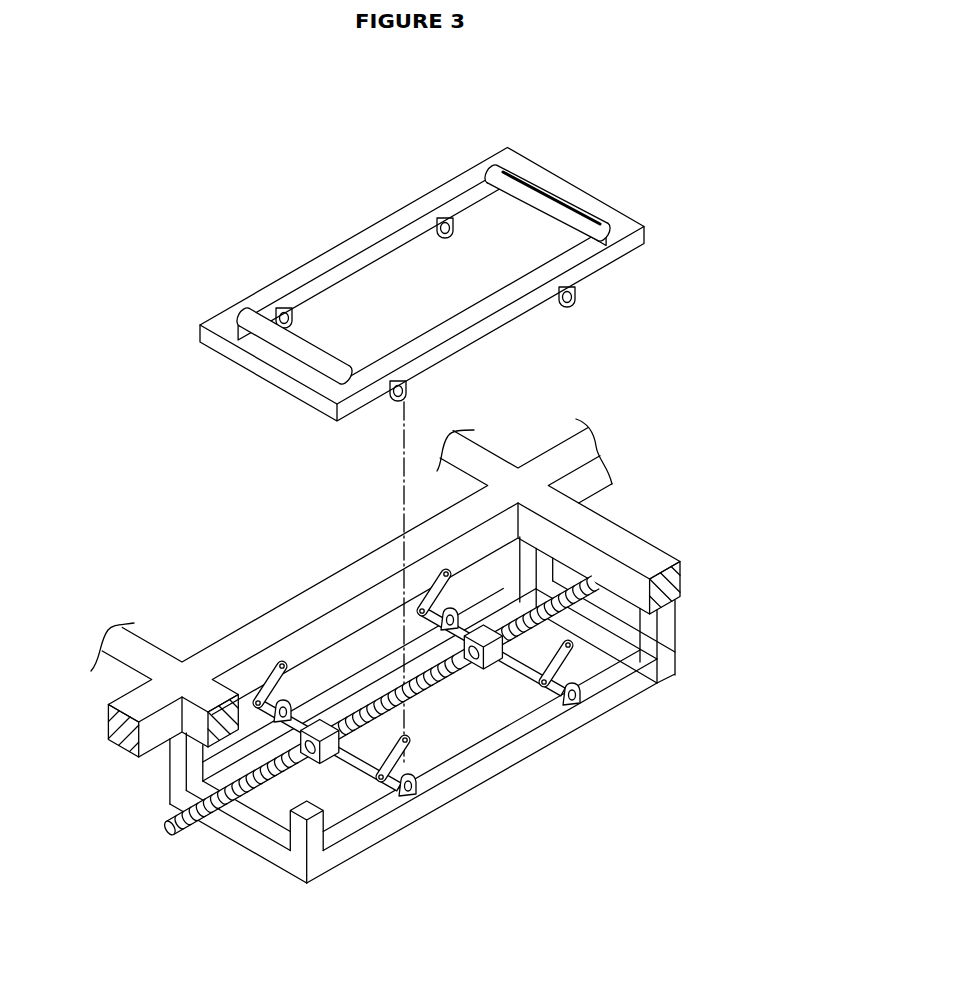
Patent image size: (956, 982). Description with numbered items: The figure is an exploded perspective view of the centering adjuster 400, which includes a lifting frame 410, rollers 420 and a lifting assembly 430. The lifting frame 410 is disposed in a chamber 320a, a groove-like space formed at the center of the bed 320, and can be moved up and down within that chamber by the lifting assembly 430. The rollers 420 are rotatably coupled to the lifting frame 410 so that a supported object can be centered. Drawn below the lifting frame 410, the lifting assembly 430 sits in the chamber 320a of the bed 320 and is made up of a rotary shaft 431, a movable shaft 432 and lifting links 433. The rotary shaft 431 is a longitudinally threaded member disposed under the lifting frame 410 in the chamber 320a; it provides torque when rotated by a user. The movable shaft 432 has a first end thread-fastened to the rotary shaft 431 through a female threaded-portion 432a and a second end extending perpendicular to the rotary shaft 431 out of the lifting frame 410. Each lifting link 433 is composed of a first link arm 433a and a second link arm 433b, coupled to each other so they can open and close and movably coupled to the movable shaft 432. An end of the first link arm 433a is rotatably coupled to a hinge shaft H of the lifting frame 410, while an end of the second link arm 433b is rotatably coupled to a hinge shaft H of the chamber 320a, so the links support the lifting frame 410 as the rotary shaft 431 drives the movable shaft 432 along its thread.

The centering adjuster 400 is at (107, 202).
The lifting frame 410 is at (333, 252).
The roller 420 is at (490, 185).
The hinge shaft H is at (573, 306).
The bed 320 is at (207, 660).
The chamber 320a is at (268, 850).
The lifting assembly 430 is at (416, 735).
The rotary shaft 431 is at (530, 672).
The movable shaft 432 is at (437, 679).
The female threaded-portion 432a is at (340, 733).
The lifting link 433 is at (436, 754).
The first link arm 433a is at (458, 765).
The second link arm 433b is at (390, 789).